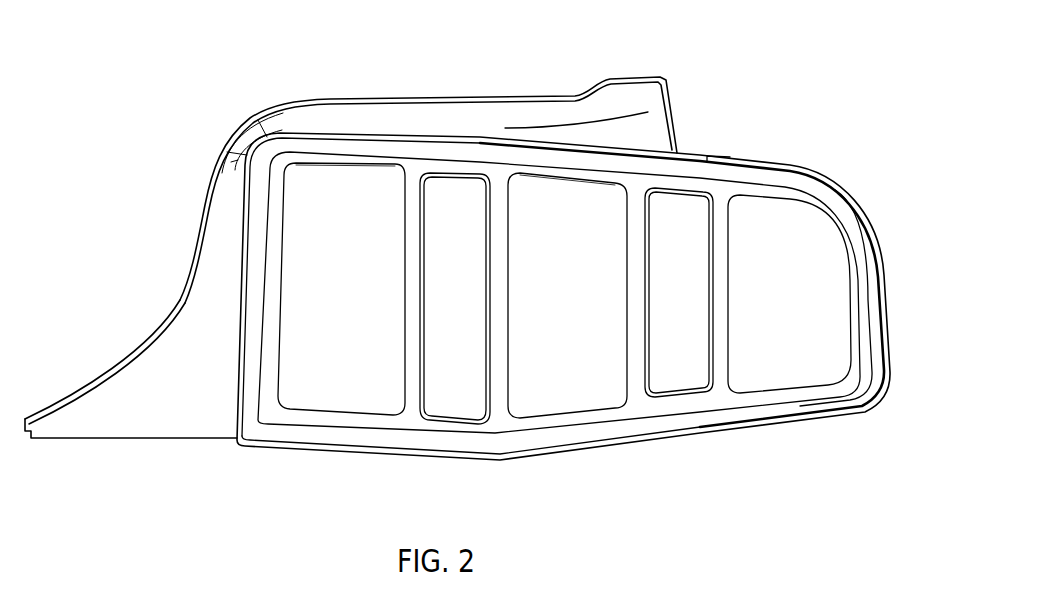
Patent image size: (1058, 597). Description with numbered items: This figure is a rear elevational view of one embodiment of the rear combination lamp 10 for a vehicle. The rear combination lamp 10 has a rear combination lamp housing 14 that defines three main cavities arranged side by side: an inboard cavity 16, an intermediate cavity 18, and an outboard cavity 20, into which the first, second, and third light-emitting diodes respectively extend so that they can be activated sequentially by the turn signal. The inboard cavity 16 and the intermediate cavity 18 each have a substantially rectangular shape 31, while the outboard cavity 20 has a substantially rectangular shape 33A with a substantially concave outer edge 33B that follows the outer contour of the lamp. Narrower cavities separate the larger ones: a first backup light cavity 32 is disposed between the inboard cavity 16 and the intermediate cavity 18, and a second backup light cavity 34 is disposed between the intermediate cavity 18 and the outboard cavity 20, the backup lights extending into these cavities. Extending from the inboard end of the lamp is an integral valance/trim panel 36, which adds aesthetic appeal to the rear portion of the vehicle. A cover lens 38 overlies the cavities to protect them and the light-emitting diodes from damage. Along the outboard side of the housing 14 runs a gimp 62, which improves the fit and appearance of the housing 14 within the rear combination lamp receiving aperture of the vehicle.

The rear combination lamp 10 is at (806, 77).
The rear combination lamp housing 14 is at (253, 138).
The inboard cavity 16 is at (335, 378).
The intermediate cavity 18 is at (577, 388).
The outboard cavity 20 is at (792, 355).
The substantially rectangular shape 31 is at (331, 305).
The first backup light cavity 32 is at (459, 392).
The substantially rectangular shape 33A is at (768, 305).
The substantially concave outer edge 33B is at (840, 267).
The second backup light cavity 34 is at (683, 363).
The integral valance/trim panel 36 is at (182, 342).
The cover lens 38 is at (724, 195).
The gimp 62 is at (845, 195).